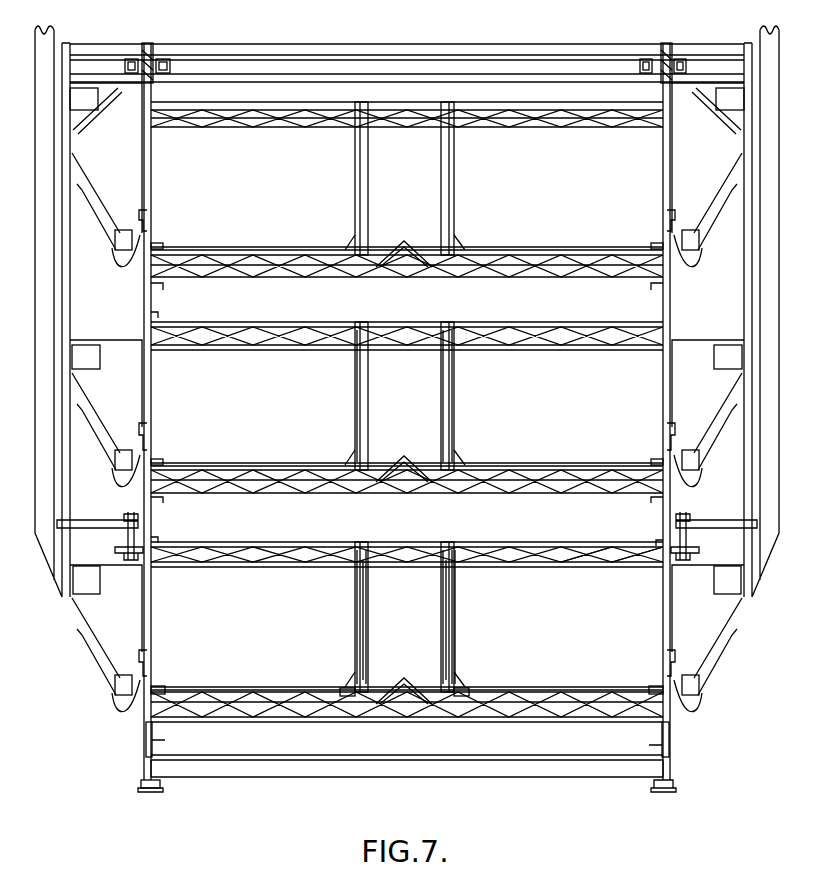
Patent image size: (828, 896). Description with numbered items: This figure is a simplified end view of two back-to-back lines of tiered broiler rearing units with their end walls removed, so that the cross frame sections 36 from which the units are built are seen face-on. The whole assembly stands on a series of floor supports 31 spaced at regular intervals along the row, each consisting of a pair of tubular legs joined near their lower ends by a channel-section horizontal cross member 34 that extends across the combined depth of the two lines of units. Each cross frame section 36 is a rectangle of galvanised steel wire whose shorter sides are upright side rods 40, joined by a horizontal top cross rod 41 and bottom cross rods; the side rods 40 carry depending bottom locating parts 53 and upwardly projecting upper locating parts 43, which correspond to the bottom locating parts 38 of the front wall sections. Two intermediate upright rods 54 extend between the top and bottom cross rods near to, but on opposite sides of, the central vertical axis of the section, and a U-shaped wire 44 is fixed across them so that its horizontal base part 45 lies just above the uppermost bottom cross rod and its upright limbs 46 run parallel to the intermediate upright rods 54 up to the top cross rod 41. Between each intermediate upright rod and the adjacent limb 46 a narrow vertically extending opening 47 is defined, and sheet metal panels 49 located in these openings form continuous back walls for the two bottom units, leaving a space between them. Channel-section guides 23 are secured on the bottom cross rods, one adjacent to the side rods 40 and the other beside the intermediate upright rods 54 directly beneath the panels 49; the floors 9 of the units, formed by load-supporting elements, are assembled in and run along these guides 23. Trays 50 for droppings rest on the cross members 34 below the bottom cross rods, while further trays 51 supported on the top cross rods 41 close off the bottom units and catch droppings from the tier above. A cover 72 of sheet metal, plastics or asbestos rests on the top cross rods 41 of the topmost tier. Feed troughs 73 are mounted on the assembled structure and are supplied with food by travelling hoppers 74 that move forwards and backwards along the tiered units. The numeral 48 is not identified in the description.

The cover 72 is at (277, 103).
The travelling hopper 74 is at (40, 327).
The feed trough 73 is at (98, 238).
The upright side rod 40 is at (663, 162).
The floor support 31 is at (147, 750).
The further tray 51 is at (345, 322).
The floor 9 is at (222, 250).
The cross frame section 36 is at (590, 250).
The sheet metal panel 49 is at (356, 188).
The intermediate upright rod 54 is at (440, 422).
The U-shaped wire 44 is at (457, 410).
The upright limb 46 is at (356, 615).
The vertically extending opening 47 is at (356, 587).
The horizontal base part 45 is at (390, 690).
The channel-section guide 23 is at (352, 692).
The bracket 48 is at (656, 287).
The upper locating part 43 is at (150, 314).
The top cross rod 41 is at (605, 563).
The bottom locating part 38 is at (147, 738).
The bottom locating part 53 is at (165, 745).
The tray 50 is at (345, 755).
The horizontal cross member 34 is at (651, 768).